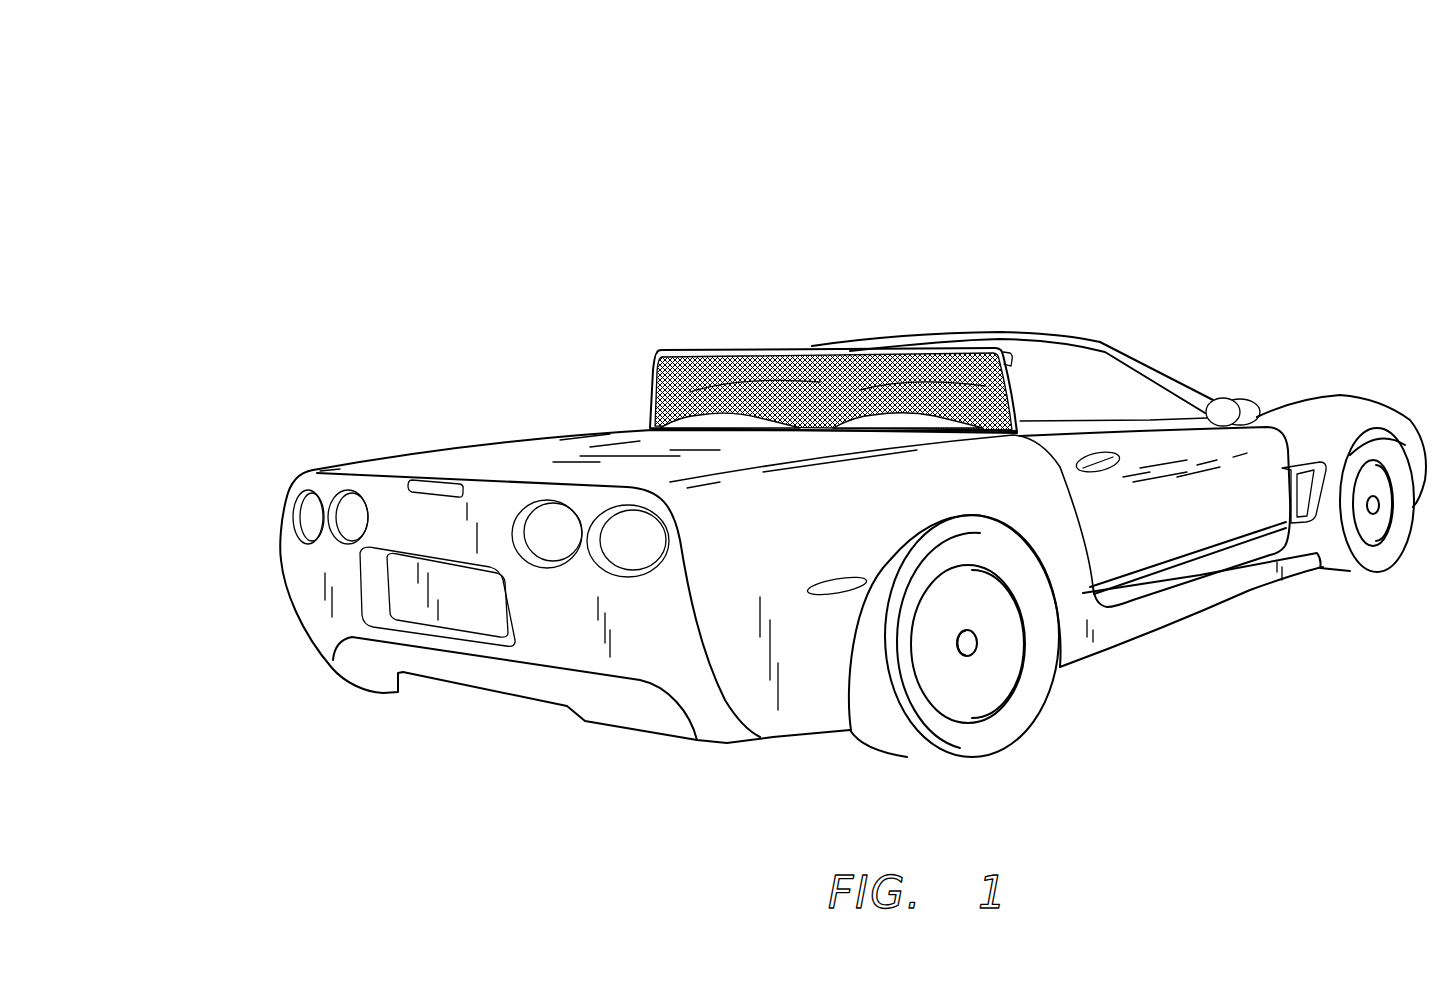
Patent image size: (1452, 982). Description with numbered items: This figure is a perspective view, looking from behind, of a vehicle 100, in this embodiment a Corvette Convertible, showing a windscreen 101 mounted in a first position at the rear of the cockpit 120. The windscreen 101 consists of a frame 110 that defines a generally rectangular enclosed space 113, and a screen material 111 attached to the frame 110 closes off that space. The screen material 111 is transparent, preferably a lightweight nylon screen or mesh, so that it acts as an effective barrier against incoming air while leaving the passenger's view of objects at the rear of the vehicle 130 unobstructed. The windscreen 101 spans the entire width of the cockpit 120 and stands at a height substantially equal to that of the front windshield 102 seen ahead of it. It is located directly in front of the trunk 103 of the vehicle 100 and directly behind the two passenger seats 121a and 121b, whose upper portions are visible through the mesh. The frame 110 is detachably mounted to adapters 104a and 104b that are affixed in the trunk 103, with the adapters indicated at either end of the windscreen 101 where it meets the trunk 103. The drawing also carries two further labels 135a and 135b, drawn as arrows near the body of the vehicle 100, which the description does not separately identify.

The vehicle 100 is at (788, 134).
The windscreen 101 is at (632, 335).
The front windshield 102 is at (1058, 322).
The trunk 103 is at (534, 444).
The adapter 104a is at (1037, 422).
The adapter 104b is at (628, 405).
The frame 110 is at (771, 338).
The screen material 111 is at (736, 358).
The enclosed space 113 is at (716, 334).
The cockpit 120 is at (1086, 421).
The passenger seat 121a is at (701, 371).
The passenger seat 121b is at (919, 371).
The rear of the vehicle 130 is at (249, 631).
The airflow direction 135a is at (912, 485).
The airflow direction 135b is at (365, 442).